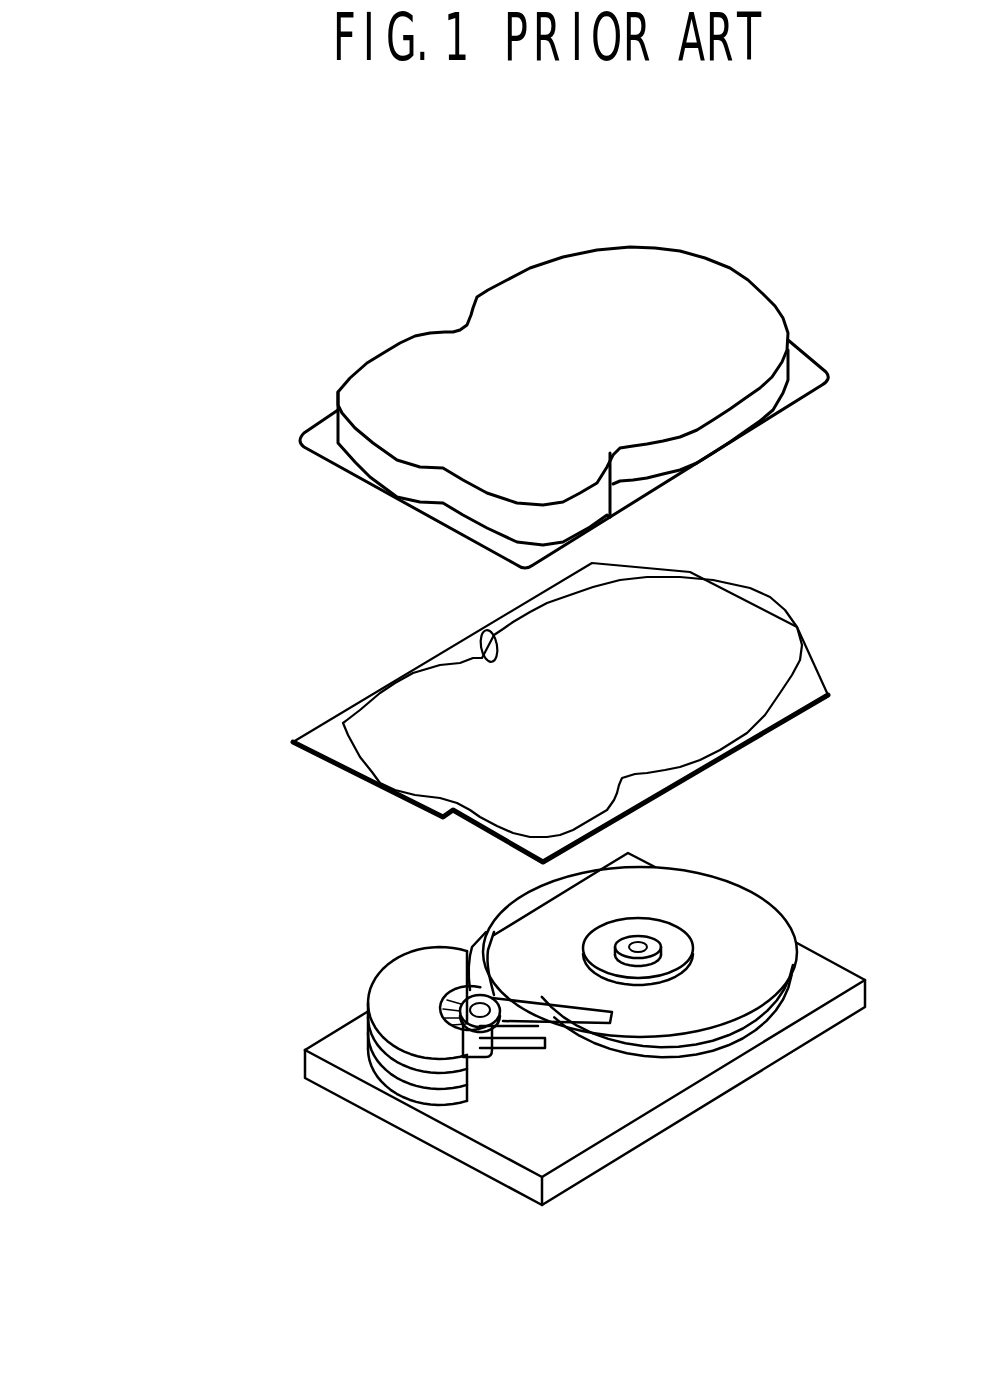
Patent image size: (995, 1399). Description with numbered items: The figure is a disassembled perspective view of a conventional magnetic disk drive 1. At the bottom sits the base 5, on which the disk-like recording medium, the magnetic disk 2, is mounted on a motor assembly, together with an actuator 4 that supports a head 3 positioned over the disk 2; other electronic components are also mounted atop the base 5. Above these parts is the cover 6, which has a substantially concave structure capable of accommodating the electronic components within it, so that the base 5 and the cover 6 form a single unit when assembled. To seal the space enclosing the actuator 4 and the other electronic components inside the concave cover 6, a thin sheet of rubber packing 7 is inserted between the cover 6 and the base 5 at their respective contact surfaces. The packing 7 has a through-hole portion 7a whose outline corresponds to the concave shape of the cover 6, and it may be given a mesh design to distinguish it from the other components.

The magnetic disk drive 1 is at (83, 247).
The magnetic disk 2 is at (748, 913).
The head 3 is at (586, 1012).
The actuator 4 is at (505, 1042).
The base 5 is at (345, 1037).
The cover 6 is at (379, 378).
The packing 7 is at (337, 737).
The through-hole portion 7a is at (487, 628).